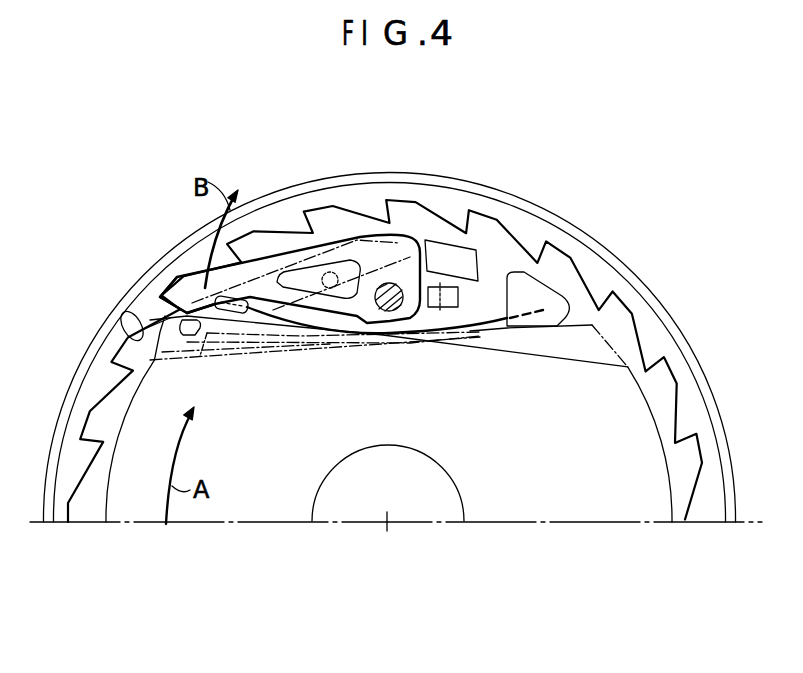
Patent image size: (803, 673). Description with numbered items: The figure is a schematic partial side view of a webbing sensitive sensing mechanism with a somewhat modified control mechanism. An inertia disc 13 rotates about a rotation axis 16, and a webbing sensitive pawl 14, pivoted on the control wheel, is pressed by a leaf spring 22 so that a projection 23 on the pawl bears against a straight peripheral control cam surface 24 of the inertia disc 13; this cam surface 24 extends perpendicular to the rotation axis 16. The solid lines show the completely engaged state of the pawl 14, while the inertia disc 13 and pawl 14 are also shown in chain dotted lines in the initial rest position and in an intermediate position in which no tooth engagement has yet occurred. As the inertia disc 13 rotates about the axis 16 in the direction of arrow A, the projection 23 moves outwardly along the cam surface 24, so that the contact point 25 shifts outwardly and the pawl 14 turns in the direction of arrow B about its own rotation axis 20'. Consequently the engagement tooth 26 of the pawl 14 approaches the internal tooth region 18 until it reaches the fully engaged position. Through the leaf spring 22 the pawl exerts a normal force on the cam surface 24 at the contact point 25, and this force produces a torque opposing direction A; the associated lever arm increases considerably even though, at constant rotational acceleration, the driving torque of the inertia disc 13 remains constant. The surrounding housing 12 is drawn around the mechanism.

The protective hood 12 is at (63, 513).
The inertia disc 13 is at (555, 500).
The webbing sensitive pawl 14 is at (293, 260).
The rotation axis 16 is at (386, 524).
The internal tooth region 18 is at (126, 350).
The rotation axis of the pawl 20' is at (401, 341).
The leaf spring 22 is at (482, 327).
The projection 23 is at (194, 307).
The peripheral control cam surface 24 is at (530, 354).
The contact point 25 is at (182, 319).
The engagement tooth 26 is at (158, 292).